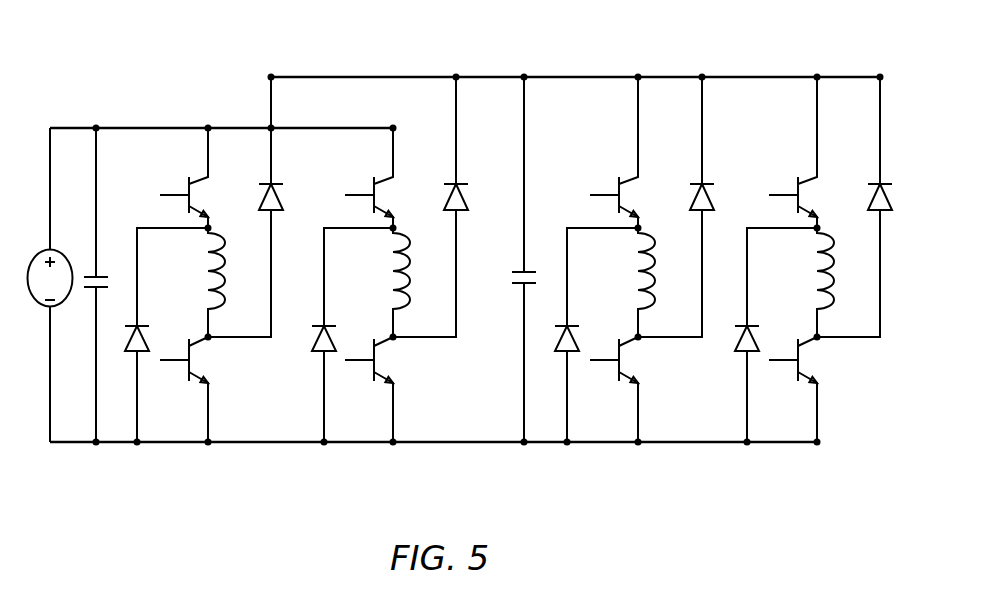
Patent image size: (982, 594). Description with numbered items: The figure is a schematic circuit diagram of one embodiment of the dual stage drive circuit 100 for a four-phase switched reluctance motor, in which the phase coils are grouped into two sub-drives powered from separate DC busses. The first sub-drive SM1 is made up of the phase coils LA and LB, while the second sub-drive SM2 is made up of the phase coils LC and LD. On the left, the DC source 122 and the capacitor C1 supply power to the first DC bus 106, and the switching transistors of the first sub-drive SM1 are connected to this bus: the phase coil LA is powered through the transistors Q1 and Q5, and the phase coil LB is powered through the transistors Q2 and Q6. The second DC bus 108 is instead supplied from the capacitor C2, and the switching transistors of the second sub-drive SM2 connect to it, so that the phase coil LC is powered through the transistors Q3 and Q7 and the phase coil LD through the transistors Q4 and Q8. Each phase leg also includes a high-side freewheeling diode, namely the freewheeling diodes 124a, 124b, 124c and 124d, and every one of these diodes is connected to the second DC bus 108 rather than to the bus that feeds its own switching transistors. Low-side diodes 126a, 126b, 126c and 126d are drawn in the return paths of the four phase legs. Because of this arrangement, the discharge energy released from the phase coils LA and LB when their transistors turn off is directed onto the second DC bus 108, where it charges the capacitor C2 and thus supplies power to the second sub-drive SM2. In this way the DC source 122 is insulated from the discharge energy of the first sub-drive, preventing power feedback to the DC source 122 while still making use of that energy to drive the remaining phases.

The dual stage drive circuit 100 is at (115, 49).
The first DC bus 106 is at (173, 127).
The second DC bus 108 is at (757, 76).
The DC source 122 is at (36, 256).
The high-side freewheeling diode 124a is at (279, 198).
The high-side freewheeling diode 124b is at (466, 198).
The high-side freewheeling diode 124c is at (709, 193).
The high-side freewheeling diode 124d is at (871, 196).
The return diode of phase A 126a is at (135, 354).
The return diode of phase B 126b is at (321, 354).
The return diode of phase C 126c is at (563, 354).
The return diode of phase D 126d is at (743, 354).
The transistor Q1 is at (197, 178).
The transistor Q2 is at (384, 178).
The transistor Q3 is at (628, 152).
The transistor Q4 is at (808, 152).
The transistor Q5 is at (184, 389).
The transistor Q6 is at (369, 389).
The transistor Q7 is at (614, 389).
The transistor Q8 is at (793, 389).
The phase coil LA is at (198, 282).
The phase coil LB is at (384, 282).
The phase coil LC is at (629, 282).
The phase coil LD is at (807, 282).
The capacitor C1 is at (88, 285).
The capacitor C2 is at (515, 259).
The first sub-drive SM1 is at (290, 380).
The second sub-drive SM2 is at (713, 380).